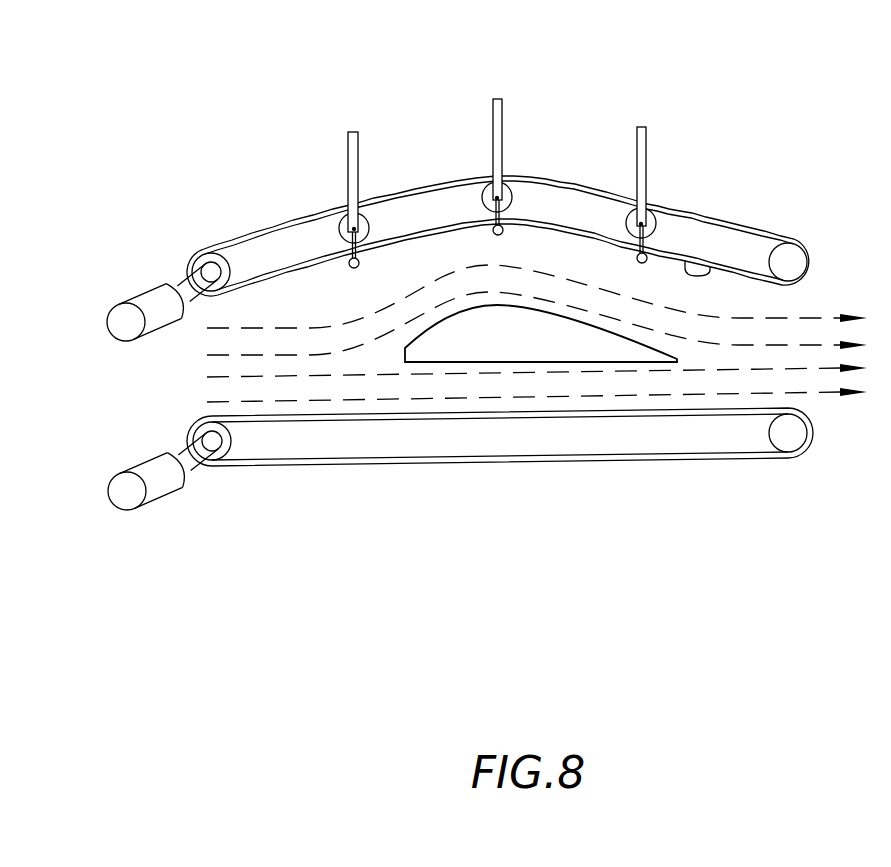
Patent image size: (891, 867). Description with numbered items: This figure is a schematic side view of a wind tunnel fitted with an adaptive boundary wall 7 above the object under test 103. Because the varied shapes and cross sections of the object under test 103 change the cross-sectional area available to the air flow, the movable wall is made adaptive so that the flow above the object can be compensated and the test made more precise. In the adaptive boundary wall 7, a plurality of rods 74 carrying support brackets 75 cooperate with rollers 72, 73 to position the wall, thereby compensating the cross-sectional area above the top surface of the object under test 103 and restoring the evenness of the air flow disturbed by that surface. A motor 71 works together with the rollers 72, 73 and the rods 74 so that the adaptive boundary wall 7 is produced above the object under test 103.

The adaptive boundary wall 7 is at (712, 270).
The motor 71 is at (157, 300).
The roller 72 is at (209, 263).
The roller 73 is at (797, 261).
The rod 74 is at (490, 232).
The support bracket 75 is at (494, 104).
The object under test 103 is at (538, 347).